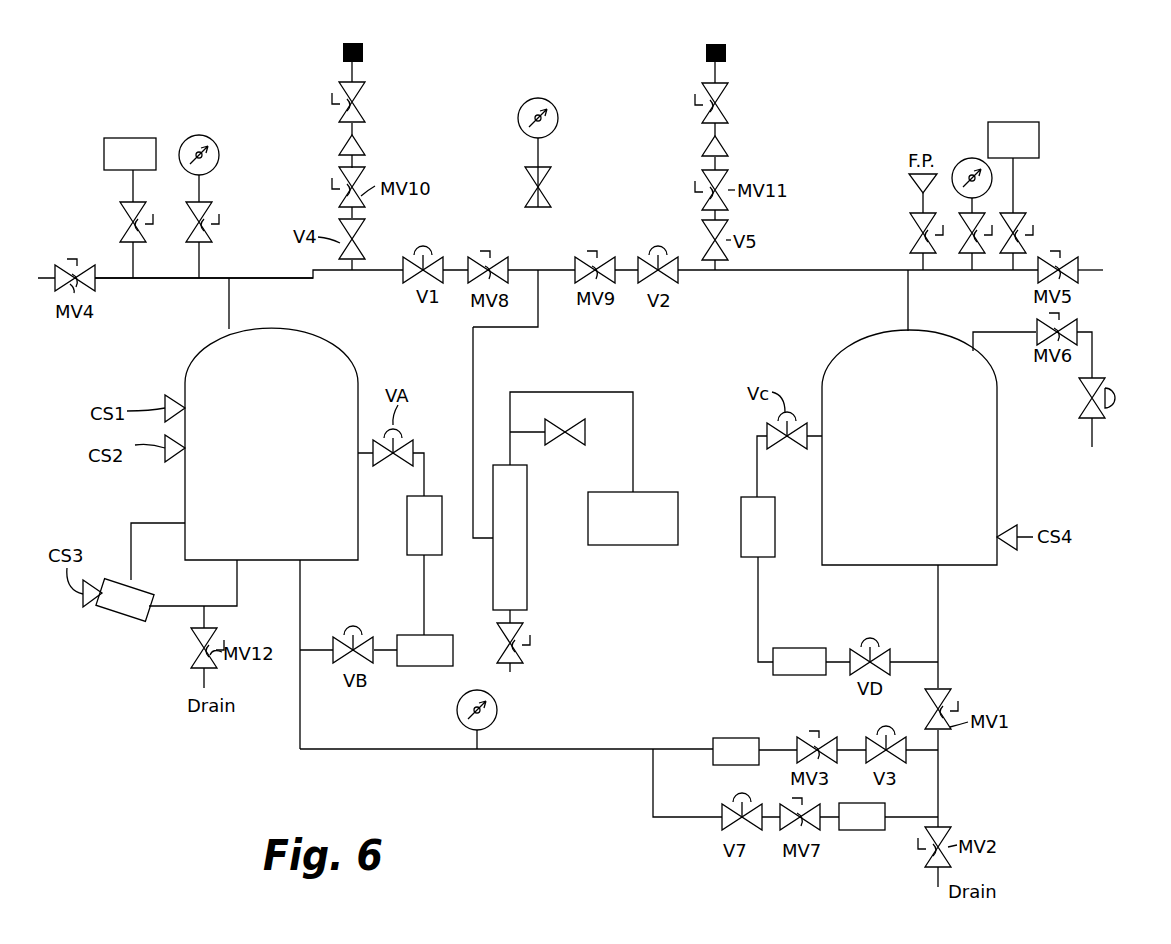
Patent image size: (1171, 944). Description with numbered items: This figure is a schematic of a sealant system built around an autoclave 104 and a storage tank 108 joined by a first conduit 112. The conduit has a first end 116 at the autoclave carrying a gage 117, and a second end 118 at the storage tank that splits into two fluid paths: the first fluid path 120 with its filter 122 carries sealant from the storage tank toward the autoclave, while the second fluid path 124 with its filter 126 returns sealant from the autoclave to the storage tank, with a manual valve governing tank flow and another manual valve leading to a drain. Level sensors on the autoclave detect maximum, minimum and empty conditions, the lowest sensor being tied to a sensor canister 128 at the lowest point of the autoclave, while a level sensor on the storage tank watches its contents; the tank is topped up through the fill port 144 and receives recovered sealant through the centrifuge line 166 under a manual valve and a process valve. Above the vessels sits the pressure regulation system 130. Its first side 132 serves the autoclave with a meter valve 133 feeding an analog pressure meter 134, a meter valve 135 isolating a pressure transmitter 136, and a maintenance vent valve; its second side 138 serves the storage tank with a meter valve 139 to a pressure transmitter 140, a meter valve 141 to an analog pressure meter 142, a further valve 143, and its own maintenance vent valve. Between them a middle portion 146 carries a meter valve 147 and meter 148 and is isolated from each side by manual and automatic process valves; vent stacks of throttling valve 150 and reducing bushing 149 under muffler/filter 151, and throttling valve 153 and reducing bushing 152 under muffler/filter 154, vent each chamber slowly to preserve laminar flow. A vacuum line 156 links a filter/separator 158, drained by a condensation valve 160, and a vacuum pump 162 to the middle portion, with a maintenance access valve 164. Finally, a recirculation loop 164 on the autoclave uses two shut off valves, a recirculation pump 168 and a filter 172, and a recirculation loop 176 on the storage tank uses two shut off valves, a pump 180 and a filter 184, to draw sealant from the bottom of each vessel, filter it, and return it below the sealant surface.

The autoclave 104 is at (271, 444).
The storage tank 108 is at (909, 447).
The first conduit 112 is at (534, 776).
The first end 116 is at (528, 747).
The gage 117 is at (490, 698).
The second end 118 is at (747, 714).
The first fluid path 120 is at (690, 748).
The filter 122 is at (750, 738).
The second fluid path 124 is at (690, 815).
The filter 126 is at (856, 830).
The sensor canister 128 is at (112, 617).
The pressure regulation system 130 is at (757, 153).
The first side 132 is at (160, 280).
The meter valve 133 is at (208, 231).
The analog pressure meter 134 is at (199, 134).
The meter valve 135 is at (128, 230).
The pressure transmitter 136 is at (138, 138).
The second side 138 is at (990, 272).
The meter valve 139 is at (1030, 222).
The pressure transmitter 140 is at (1013, 122).
The meter valve 141 is at (985, 230).
The analog pressure meter 142 is at (965, 160).
The valve 143 is at (918, 237).
The fill port 144 is at (925, 150).
The middle portion 146 is at (555, 274).
The meter valve 147 is at (547, 198).
The meter 148 is at (538, 97).
The reducing bushing 149 is at (366, 145).
The throttling valve 150 is at (363, 110).
The muffler/filter 151 is at (364, 50).
The reducing bushing 152 is at (705, 144).
The throttling valve 153 is at (705, 118).
The muffler/filter 154 is at (708, 50).
The vacuum line 156 is at (472, 374).
The filter/separator 158 is at (527, 538).
The valve 160 is at (518, 631).
The vacuum pump 162 is at (605, 545).
The valve / recirculation loop 164 is at (565, 442).
The centrifuge line 166 is at (1094, 352).
The recirculation pump 168 is at (437, 634).
The filter 172 is at (405, 527).
The recirculation loop 176 is at (739, 411).
The pump 180 is at (785, 645).
The filter 184 is at (775, 538).